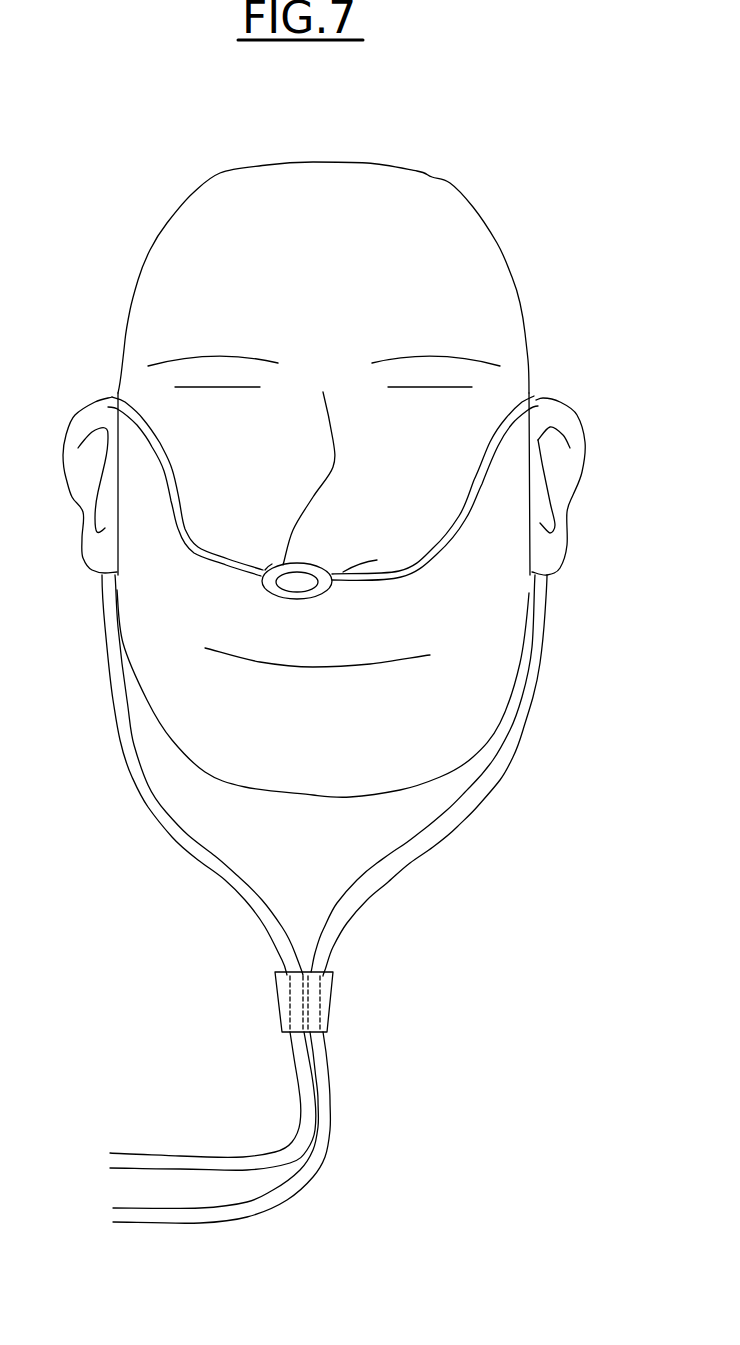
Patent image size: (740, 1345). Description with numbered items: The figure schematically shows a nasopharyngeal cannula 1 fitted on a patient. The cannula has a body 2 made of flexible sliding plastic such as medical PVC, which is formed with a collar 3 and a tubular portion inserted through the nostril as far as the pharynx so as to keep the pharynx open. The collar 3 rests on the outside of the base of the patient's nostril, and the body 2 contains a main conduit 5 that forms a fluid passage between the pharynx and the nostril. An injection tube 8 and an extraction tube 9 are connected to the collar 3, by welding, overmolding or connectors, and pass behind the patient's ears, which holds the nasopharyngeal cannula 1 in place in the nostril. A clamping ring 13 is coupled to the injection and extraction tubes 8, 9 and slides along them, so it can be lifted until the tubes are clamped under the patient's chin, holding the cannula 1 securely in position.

The nasopharyngeal cannula 1 is at (96, 782).
The body 2 is at (307, 612).
The collar 3 is at (270, 568).
The main conduit 5 is at (286, 592).
The injection tube 8 is at (178, 510).
The extraction tube 9 is at (467, 498).
The clamping ring 13 is at (330, 1000).